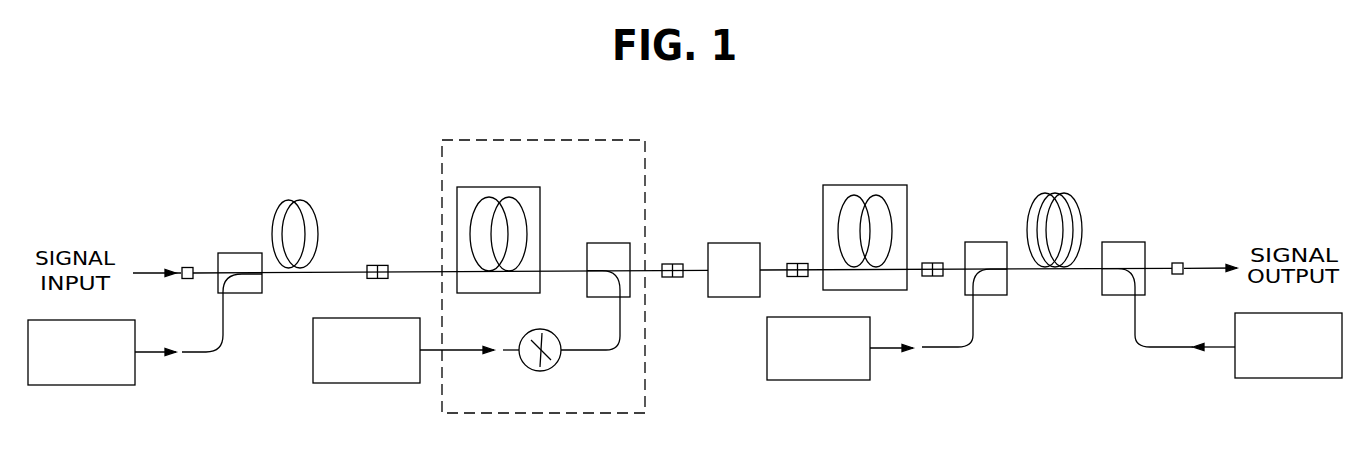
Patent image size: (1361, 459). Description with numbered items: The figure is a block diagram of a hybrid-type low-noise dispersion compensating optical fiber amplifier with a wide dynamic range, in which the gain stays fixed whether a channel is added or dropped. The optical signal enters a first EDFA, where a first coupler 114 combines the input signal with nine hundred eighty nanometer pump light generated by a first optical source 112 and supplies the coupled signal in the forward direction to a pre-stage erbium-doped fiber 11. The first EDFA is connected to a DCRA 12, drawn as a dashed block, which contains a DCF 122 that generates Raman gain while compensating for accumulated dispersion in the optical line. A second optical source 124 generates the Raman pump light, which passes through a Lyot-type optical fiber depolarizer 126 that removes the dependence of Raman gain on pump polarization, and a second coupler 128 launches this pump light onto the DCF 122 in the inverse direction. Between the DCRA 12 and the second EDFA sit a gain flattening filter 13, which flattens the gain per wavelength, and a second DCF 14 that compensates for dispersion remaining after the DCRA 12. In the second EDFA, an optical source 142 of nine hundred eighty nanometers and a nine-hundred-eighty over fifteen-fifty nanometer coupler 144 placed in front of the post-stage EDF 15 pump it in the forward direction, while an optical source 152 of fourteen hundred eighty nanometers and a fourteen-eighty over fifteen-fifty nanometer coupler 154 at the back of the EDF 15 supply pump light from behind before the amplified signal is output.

The pre-stage erbium-doped fiber 11 is at (310, 208).
The DCRA 12 is at (547, 137).
The gain flattening filter 13 is at (734, 243).
The second DCF 14 is at (823, 210).
The EDF 15 is at (1082, 220).
The first optical source 112 is at (87, 385).
The first coupler 114 is at (249, 293).
The DCF 122 is at (455, 212).
The second optical source 124 is at (367, 383).
The optical fiber depolarizer 126 is at (557, 365).
The second coupler 128 is at (610, 243).
The optical source of 980 nm 142 is at (818, 380).
The 980/1550 nm coupler 144 is at (990, 295).
The optical source of 1480 nm 152 is at (1288, 378).
The 1480/1550 nm coupler 154 is at (1112, 295).